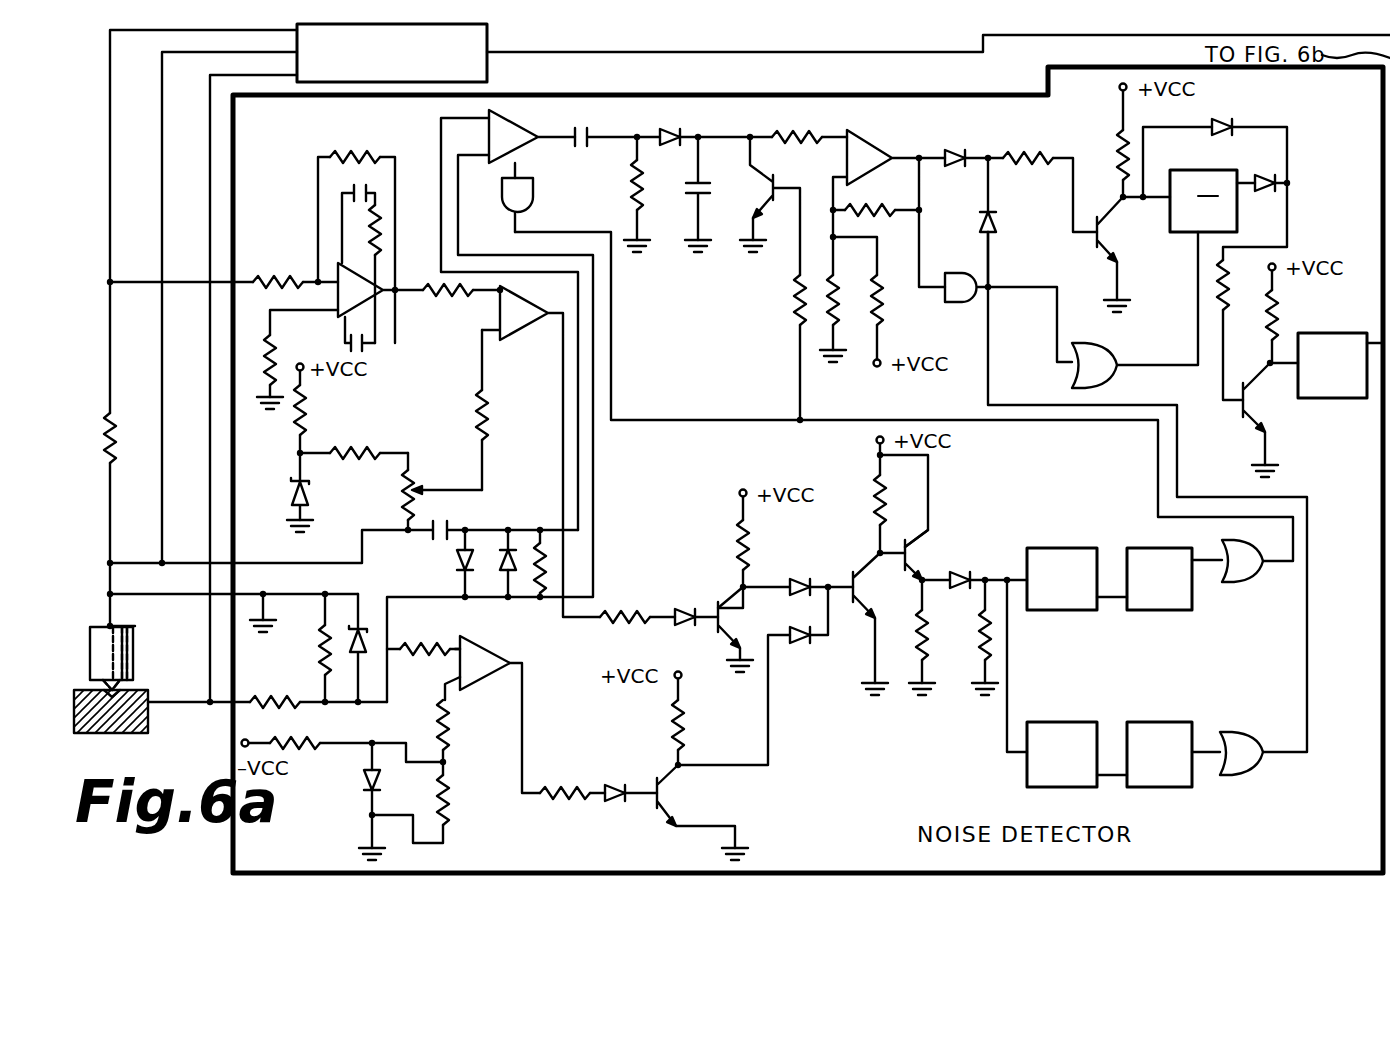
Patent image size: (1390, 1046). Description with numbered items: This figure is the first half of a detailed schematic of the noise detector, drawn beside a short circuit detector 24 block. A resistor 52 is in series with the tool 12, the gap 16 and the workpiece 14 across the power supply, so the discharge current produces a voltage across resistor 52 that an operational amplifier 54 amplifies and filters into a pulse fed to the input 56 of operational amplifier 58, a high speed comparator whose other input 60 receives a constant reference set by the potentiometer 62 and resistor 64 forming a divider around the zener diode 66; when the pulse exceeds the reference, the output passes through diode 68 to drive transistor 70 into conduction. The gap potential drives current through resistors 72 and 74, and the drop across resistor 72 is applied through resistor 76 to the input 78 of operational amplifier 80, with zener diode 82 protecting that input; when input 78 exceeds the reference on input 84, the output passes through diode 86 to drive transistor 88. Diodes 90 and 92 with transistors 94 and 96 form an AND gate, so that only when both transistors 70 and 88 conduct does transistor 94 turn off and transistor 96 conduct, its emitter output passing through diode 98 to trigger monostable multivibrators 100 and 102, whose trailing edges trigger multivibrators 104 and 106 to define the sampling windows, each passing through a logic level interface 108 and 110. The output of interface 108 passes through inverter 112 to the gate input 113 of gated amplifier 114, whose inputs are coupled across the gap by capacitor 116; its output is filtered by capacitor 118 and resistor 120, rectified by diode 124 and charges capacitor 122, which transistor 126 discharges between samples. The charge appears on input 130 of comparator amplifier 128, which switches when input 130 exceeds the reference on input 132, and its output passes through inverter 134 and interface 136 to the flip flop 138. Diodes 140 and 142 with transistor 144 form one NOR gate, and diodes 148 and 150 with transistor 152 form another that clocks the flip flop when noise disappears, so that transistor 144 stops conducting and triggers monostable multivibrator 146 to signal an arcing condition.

The tool 12 is at (133, 660).
The workpiece 14 is at (148, 722).
The gap 16 is at (118, 692).
The short circuit detector 24 is at (487, 68).
The resistor 52 is at (113, 435).
The operational amplifier 54 is at (376, 292).
The input 56 is at (487, 300).
The operational amplifier 58 is at (533, 322).
The input 60 is at (484, 372).
The potentiometer 62 is at (415, 463).
The resistor 64 is at (370, 450).
The zener diode 66 is at (308, 494).
The diode 68 is at (685, 605).
The transistor 70 is at (721, 617).
The resistor 72 is at (320, 650).
The resistor 74 is at (285, 706).
The resistor 76 is at (428, 645).
The input 78 is at (462, 648).
The operational amplifier 80 is at (490, 648).
The zener diode 82 is at (365, 650).
The input 84 is at (443, 684).
The diode 86 is at (622, 775).
The transistor 88 is at (660, 793).
The diode 90 is at (802, 578).
The diode 92 is at (802, 645).
The transistor 94 is at (857, 590).
The transistor 96 is at (925, 557).
The diode 98 is at (958, 571).
The monostable multivibrator 100 is at (1045, 548).
The monostable multivibrator 102 is at (1047, 722).
The monostable multivibrator 104 is at (1165, 611).
The monostable multivibrator 106 is at (1163, 722).
The logic level interface 108 is at (1250, 582).
The logic level interface 110 is at (1255, 772).
The inverter 112 is at (533, 205).
The gate input 113 is at (518, 170).
The gated amplifier 114 is at (520, 124).
The capacitor 116 is at (440, 520).
The capacitor 118 is at (581, 150).
The resistor 120 is at (640, 208).
The capacitor 122 is at (712, 189).
The diode 124 is at (665, 125).
The transistor 126 is at (778, 182).
The comparator amplifier 128 is at (880, 148).
The input 130 is at (840, 131).
The input 132 is at (845, 200).
The inverter 134 is at (953, 302).
The interface 136 is at (1110, 380).
The flip flop 138 is at (1195, 170).
The diode 140 is at (1222, 115).
The diode 142 is at (1265, 193).
The transistor 144 is at (1247, 402).
The monostable multivibrator 146 is at (1345, 322).
The diode 148 is at (957, 150).
The diode 150 is at (996, 222).
The transistor 152 is at (1095, 240).